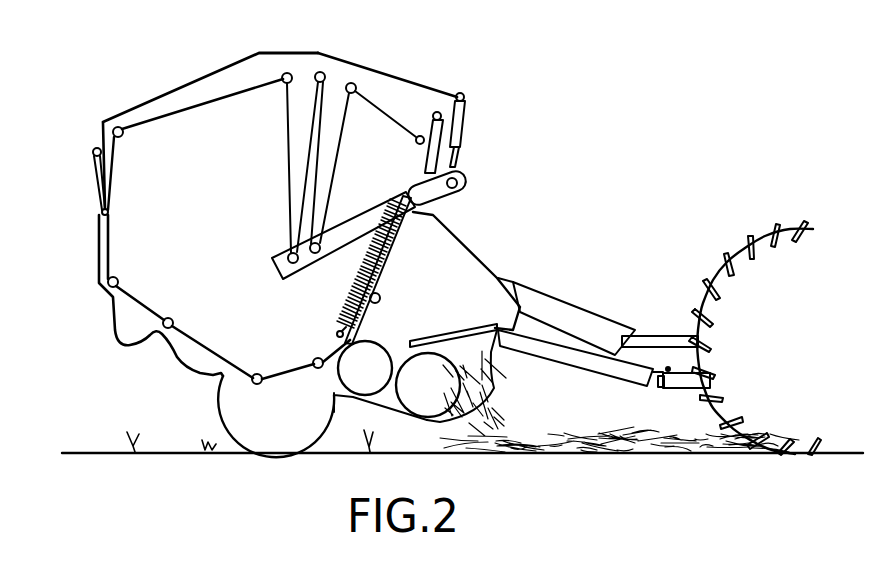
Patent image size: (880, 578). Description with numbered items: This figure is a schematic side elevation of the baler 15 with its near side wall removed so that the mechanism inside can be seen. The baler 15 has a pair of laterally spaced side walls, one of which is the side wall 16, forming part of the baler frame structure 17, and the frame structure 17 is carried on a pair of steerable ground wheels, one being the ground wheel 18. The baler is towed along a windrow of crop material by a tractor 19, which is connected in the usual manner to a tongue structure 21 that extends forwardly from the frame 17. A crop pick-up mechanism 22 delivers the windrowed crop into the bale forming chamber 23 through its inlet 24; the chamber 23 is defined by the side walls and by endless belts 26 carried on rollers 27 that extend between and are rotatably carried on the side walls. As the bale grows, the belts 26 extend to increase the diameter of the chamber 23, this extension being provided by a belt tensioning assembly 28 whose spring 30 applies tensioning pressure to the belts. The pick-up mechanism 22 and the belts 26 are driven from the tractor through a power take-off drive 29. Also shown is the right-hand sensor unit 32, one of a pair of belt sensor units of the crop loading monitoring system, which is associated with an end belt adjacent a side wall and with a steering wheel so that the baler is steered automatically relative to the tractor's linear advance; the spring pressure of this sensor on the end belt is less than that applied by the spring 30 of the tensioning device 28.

The baler 15 is at (208, 79).
The side wall 16 is at (410, 102).
The baler frame structure 17 is at (450, 267).
The steerable ground wheel 18 is at (262, 432).
The tractor 19 is at (750, 272).
The tongue structure 21 is at (601, 357).
The crop pick-up mechanism 22 is at (418, 393).
The bale forming chamber 23 is at (162, 203).
The inlet 24 is at (373, 338).
The endless belts 26 is at (185, 101).
The rollers 27 is at (439, 111).
The belt tensioning assembly 28 is at (361, 206).
The power take-off drive 29 is at (659, 335).
The spring 30 is at (357, 287).
The right-hand sensor unit 32 is at (79, 197).